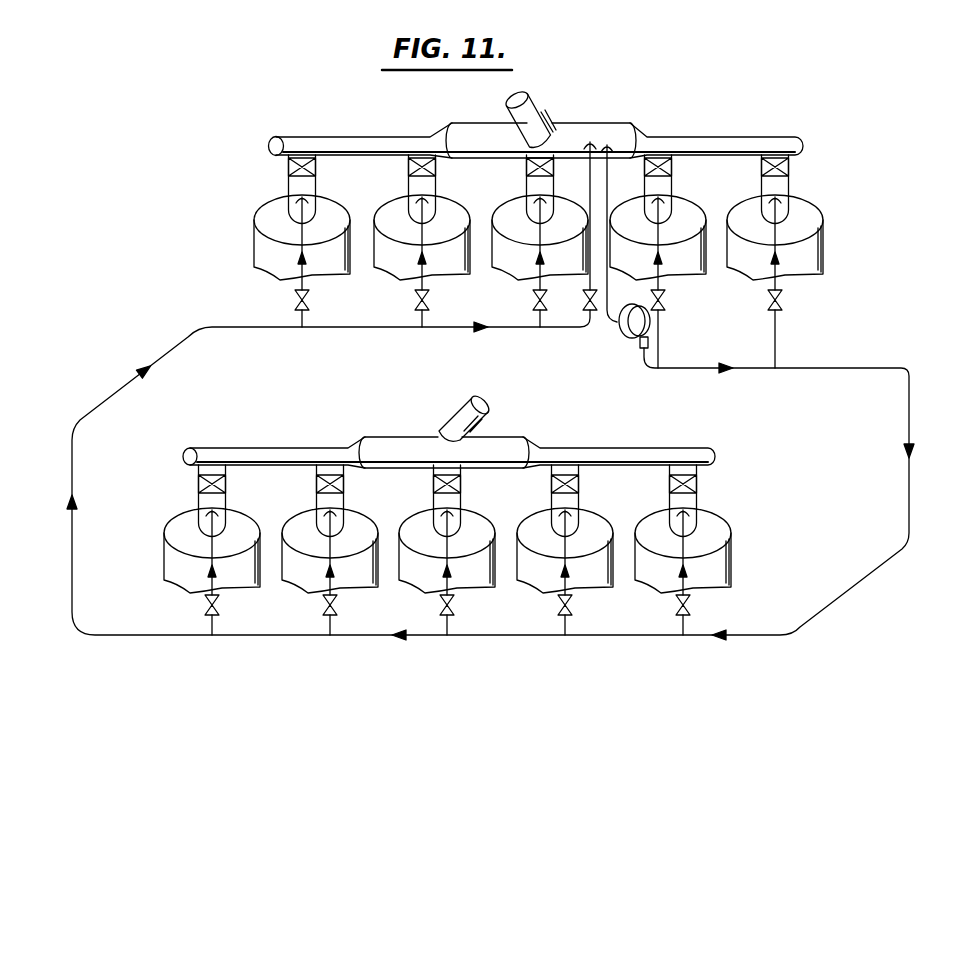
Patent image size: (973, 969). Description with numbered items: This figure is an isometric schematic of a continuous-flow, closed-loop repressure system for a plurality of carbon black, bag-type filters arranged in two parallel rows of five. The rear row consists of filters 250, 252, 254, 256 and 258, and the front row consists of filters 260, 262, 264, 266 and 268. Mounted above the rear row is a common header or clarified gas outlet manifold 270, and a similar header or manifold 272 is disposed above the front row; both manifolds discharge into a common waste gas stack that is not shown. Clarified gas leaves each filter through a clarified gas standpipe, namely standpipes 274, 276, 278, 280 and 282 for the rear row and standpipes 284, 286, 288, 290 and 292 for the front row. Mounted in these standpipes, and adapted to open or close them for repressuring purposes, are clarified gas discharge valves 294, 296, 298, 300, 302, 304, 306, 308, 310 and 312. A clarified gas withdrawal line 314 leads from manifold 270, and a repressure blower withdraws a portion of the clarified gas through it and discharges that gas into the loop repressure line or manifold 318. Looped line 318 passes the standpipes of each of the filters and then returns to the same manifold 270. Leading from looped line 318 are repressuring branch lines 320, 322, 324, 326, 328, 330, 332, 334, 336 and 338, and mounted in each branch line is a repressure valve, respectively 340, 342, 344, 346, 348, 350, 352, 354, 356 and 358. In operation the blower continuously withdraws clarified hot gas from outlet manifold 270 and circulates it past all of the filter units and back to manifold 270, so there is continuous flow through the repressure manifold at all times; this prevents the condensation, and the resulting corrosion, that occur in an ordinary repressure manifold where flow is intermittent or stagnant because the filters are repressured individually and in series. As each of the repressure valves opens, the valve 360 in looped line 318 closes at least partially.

The filter 250 is at (268, 242).
The filter 252 is at (422, 242).
The filter 254 is at (539, 242).
The filter 256 is at (656, 242).
The filter 258 is at (773, 242).
The filter 260 is at (683, 551).
The filter 262 is at (565, 551).
The filter 264 is at (447, 551).
The filter 266 is at (330, 551).
The filter 268 is at (190, 551).
The clarified gas outlet manifold 270 is at (724, 137).
The clarified gas outlet manifold 272 is at (625, 449).
The clarified gas standpipe 274 is at (292, 188).
The clarified gas standpipe 276 is at (412, 188).
The clarified gas standpipe 278 is at (530, 188).
The clarified gas standpipe 280 is at (660, 188).
The clarified gas standpipe 282 is at (777, 190).
The clarified gas standpipe 284 is at (688, 499).
The clarified gas standpipe 286 is at (561, 501).
The clarified gas standpipe 288 is at (443, 501).
The clarified gas standpipe 290 is at (326, 501).
The clarified gas standpipe 292 is at (208, 501).
The clarified gas discharge valve 294 is at (288, 170).
The clarified gas discharge valve 296 is at (408, 170).
The clarified gas discharge valve 298 is at (526, 173).
The clarified gas discharge valve 300 is at (672, 172).
The clarified gas discharge valve 302 is at (789, 171).
The clarified gas discharge valve 304 is at (669, 480).
The clarified gas discharge valve 306 is at (551, 486).
The clarified gas discharge valve 308 is at (433, 486).
The clarified gas discharge valve 310 is at (316, 486).
The clarified gas discharge valve 312 is at (198, 486).
The clarified gas withdrawal line 314 is at (612, 340).
The loop repressure line 318 is at (588, 191).
The repressuring branch line 320 is at (254, 229).
The repressuring branch line 322 is at (414, 232).
The repressuring branch line 324 is at (531, 232).
The repressuring branch line 326 is at (646, 232).
The repressuring branch line 328 is at (764, 232).
The repressuring branch line 330 is at (678, 545).
The repressuring branch line 332 is at (558, 545).
The repressuring branch line 334 is at (440, 545).
The repressuring branch line 336 is at (323, 545).
The repressuring branch line 338 is at (170, 540).
The repressure valve 340 is at (296, 306).
The repressure valve 342 is at (416, 306).
The repressure valve 344 is at (534, 306).
The repressure valve 346 is at (666, 298).
The repressure valve 348 is at (783, 298).
The repressure valve 350 is at (677, 611).
The repressure valve 352 is at (559, 611).
The repressure valve 354 is at (441, 611).
The repressure valve 356 is at (324, 611).
The repressure valve 358 is at (206, 611).
The valve 360 is at (585, 291).